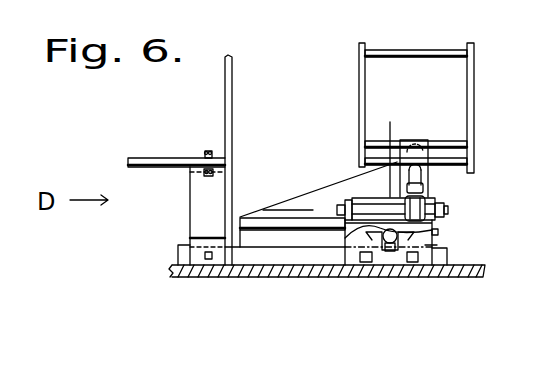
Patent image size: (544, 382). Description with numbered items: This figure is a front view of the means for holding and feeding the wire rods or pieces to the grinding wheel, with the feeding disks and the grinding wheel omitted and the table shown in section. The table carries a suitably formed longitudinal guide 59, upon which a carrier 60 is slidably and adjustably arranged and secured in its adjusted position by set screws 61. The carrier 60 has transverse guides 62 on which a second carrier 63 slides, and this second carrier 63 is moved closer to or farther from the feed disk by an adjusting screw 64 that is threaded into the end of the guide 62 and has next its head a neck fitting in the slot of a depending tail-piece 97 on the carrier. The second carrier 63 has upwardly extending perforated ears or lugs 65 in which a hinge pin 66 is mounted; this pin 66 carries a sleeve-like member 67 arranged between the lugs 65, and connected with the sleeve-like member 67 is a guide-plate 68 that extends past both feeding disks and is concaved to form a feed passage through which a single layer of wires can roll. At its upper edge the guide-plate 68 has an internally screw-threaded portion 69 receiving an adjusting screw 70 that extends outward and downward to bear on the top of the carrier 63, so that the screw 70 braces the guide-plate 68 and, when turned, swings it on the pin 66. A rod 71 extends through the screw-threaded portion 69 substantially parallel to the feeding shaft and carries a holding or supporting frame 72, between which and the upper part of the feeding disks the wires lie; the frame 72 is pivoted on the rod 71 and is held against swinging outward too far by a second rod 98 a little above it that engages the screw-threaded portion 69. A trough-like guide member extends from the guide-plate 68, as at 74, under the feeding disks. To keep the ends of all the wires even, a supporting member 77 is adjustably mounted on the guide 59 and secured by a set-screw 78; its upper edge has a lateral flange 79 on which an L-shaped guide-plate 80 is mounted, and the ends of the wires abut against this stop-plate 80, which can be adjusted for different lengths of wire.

The longitudinal guide 59 is at (177, 253).
The carrier 60 is at (425, 262).
The set screws 61 is at (410, 268).
The transverse guides 62 is at (369, 234).
The second carrier 63 is at (439, 231).
The adjusting screw 64 is at (361, 232).
The ears or lugs 65 is at (342, 204).
The hinge pin 66 is at (346, 207).
The sleeve-like member 67 is at (399, 149).
The guide-plate 68 is at (346, 196).
The screw-threaded portion 69 is at (421, 138).
The adjusting screw 70 is at (426, 187).
The rod 71 is at (372, 141).
The holding or supporting frame 72 is at (475, 82).
The guide member portion 74 is at (318, 206).
The supporting member 77 is at (197, 212).
The set-screw 78 is at (207, 261).
The lateral flange 79 is at (200, 178).
The L-shaped guide-plate 80 is at (232, 121).
The tail-piece 97 is at (438, 245).
The second rod 98 is at (458, 140).